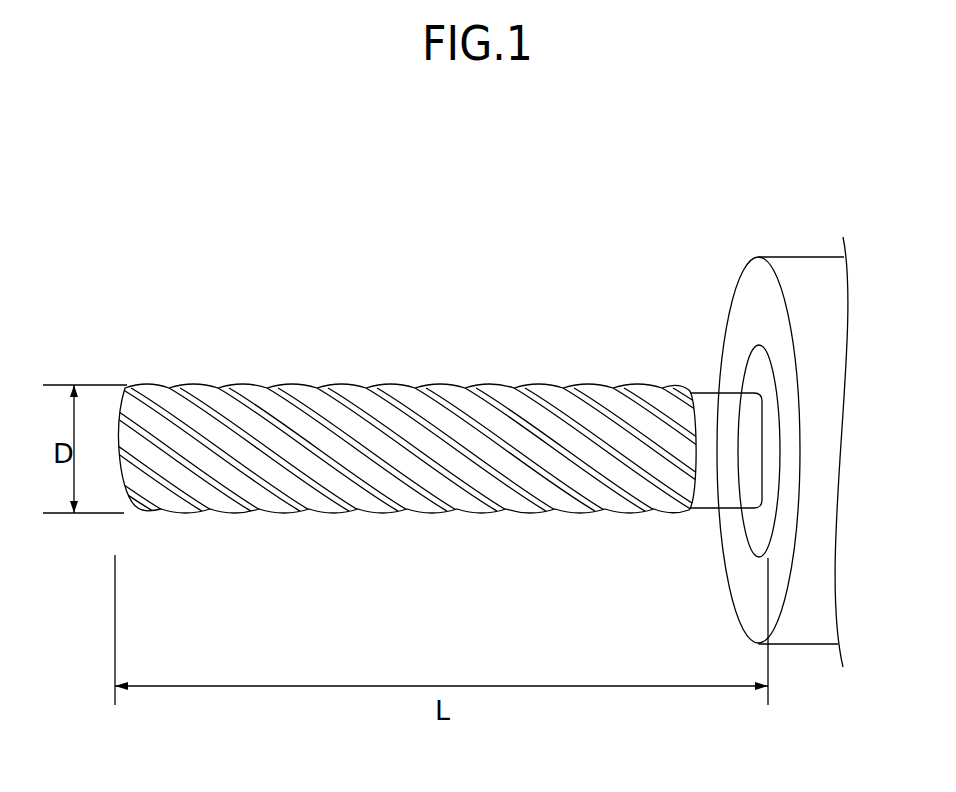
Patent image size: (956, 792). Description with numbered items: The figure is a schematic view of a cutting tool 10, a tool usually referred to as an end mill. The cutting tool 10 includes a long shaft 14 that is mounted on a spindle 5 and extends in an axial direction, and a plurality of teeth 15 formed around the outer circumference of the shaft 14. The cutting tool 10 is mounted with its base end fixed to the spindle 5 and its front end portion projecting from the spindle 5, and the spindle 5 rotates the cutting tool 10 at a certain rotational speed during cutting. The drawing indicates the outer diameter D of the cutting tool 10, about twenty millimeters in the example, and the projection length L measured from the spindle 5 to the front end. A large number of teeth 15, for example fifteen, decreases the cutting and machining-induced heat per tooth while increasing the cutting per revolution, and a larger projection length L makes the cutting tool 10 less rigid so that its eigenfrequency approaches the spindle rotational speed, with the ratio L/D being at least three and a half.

The spindle 5 is at (810, 257).
The cutting tool 10 is at (389, 380).
The shaft 14 is at (699, 393).
The teeth 15 is at (218, 387).